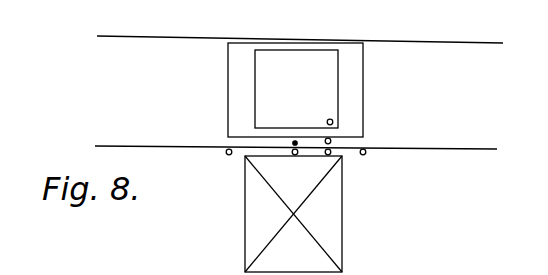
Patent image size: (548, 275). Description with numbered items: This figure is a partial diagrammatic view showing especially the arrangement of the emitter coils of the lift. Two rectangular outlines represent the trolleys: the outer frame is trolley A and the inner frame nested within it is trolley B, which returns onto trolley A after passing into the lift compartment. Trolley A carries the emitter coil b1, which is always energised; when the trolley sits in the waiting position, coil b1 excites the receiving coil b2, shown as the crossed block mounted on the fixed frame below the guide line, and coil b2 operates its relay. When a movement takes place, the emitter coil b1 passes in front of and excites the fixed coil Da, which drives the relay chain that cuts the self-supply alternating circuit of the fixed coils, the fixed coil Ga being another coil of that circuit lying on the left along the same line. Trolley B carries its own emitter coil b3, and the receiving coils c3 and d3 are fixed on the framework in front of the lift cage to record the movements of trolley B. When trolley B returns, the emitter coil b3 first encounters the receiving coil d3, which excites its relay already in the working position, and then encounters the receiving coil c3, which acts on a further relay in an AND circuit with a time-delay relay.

The trolley A is at (358, 63).
The trolley B is at (308, 68).
The emitter coil b1 is at (295, 143).
The receiving coil b2 is at (295, 155).
The emitter coil b3 is at (333, 121).
The receiving coil c3 is at (340, 160).
The receiving coil d3 is at (331, 141).
The fixed coil Ga is at (227, 154).
The fixed coil Da is at (365, 154).